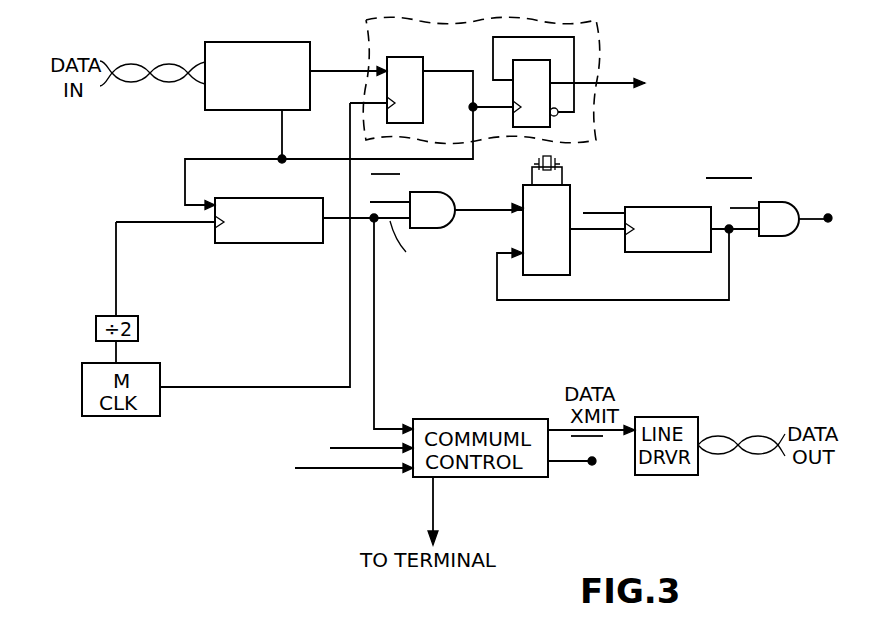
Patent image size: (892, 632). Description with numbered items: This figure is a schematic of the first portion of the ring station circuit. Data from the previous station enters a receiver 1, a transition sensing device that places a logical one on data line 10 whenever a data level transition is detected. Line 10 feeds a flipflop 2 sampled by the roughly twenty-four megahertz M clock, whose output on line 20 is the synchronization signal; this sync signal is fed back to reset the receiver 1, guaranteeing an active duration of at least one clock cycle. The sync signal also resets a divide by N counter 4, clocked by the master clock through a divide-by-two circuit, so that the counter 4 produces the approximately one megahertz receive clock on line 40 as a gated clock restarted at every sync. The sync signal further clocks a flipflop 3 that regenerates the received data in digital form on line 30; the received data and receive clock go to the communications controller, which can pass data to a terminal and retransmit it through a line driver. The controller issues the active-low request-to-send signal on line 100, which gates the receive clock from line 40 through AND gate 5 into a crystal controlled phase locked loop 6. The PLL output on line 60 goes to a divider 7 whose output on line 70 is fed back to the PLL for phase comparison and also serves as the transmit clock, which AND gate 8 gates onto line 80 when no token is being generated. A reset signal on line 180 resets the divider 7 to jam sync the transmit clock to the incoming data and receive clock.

The receiver 1 is at (262, 42).
The data line 10 is at (329, 64).
The flipflop 2 is at (418, 57).
The synchronization signal line 20 is at (449, 69).
The flipflop 3 is at (550, 125).
The received data line 30 is at (635, 80).
The divide by N counter 4 is at (273, 243).
The AND gate 5 is at (433, 228).
The receive clock line 40 is at (374, 312).
The phase locked loop 6 is at (571, 185).
The PLL output line 60 is at (601, 232).
The divider 7 is at (668, 252).
The transmit clock line 70 is at (657, 302).
The AND gate 8 is at (780, 236).
The transmit clock line 80 is at (812, 220).
The RTS line 100 is at (576, 472).
The reset line 180 is at (604, 212).